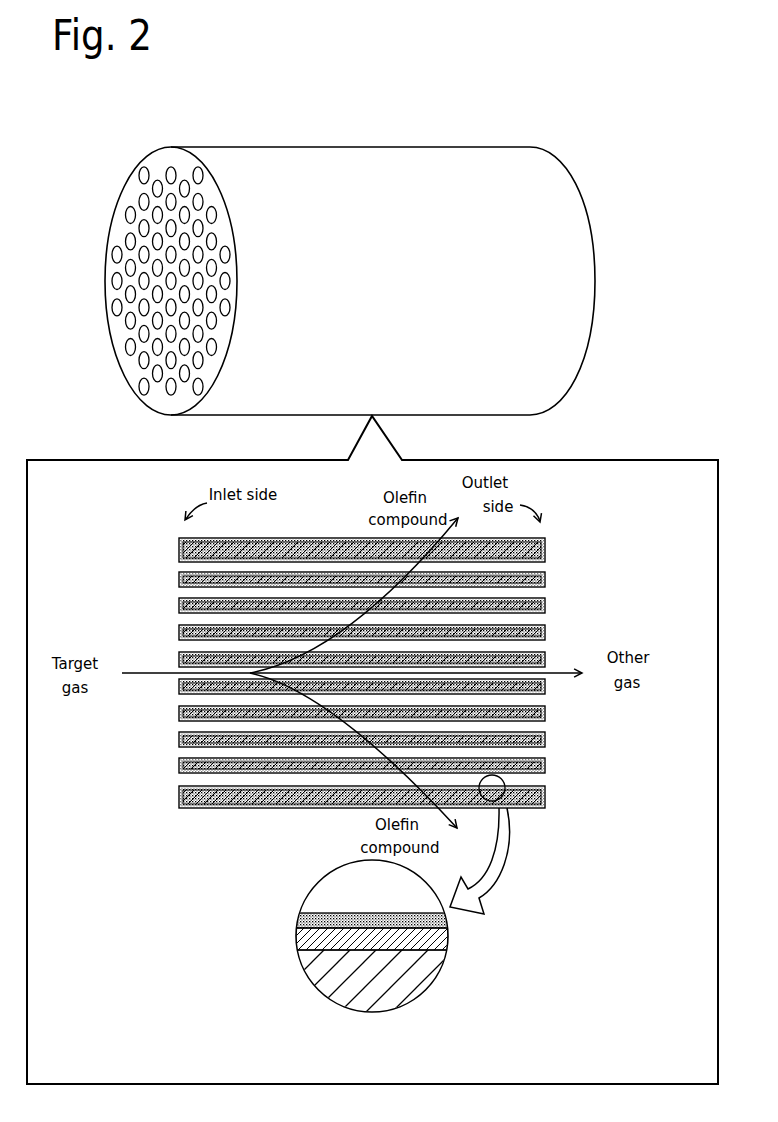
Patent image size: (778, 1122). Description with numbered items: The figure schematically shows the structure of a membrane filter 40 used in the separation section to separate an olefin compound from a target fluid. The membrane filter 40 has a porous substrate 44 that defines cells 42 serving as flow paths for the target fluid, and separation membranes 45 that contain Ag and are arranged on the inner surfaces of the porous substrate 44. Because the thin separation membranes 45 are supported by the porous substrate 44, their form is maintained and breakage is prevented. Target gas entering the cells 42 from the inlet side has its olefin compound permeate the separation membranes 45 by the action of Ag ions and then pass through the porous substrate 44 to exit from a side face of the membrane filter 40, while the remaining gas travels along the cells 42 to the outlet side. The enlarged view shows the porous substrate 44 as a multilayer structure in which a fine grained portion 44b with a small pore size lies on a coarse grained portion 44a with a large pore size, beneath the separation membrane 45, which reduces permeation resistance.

The membrane filter 40 is at (526, 127).
The cells 42 is at (117, 297).
The porous substrate 44 is at (127, 205).
The coarse grained portion 44a is at (315, 973).
The fine grained portion 44b is at (312, 943).
The separation membranes 45 is at (218, 731).